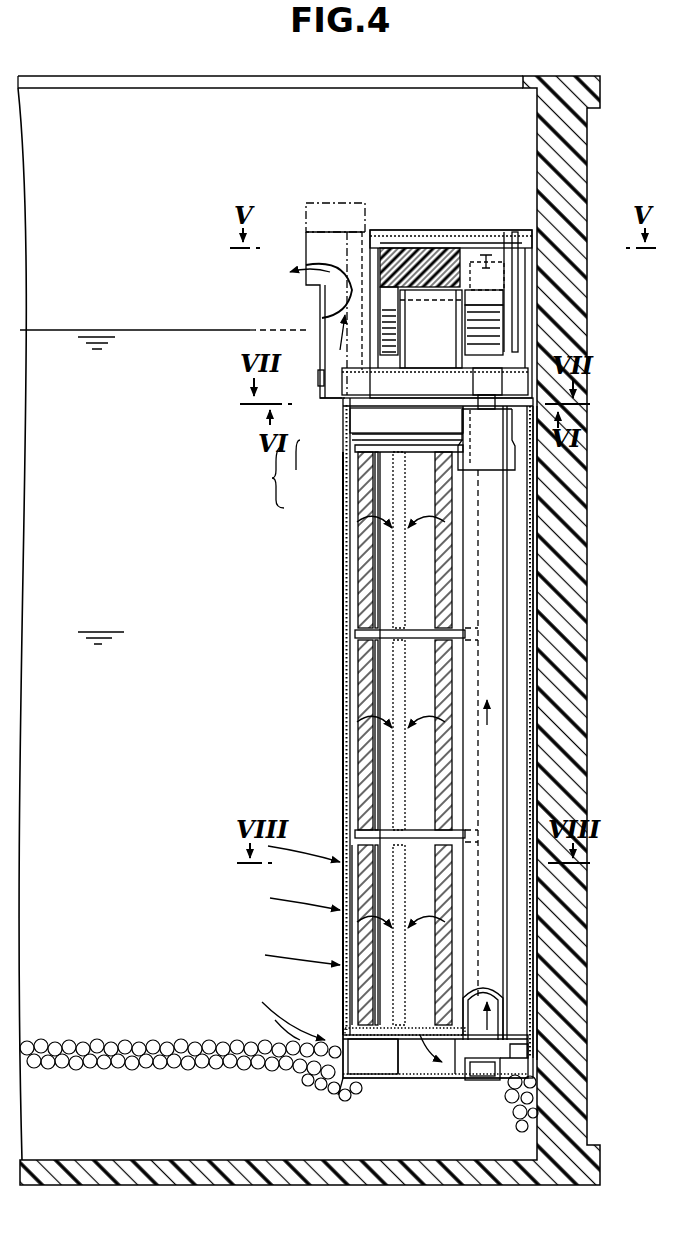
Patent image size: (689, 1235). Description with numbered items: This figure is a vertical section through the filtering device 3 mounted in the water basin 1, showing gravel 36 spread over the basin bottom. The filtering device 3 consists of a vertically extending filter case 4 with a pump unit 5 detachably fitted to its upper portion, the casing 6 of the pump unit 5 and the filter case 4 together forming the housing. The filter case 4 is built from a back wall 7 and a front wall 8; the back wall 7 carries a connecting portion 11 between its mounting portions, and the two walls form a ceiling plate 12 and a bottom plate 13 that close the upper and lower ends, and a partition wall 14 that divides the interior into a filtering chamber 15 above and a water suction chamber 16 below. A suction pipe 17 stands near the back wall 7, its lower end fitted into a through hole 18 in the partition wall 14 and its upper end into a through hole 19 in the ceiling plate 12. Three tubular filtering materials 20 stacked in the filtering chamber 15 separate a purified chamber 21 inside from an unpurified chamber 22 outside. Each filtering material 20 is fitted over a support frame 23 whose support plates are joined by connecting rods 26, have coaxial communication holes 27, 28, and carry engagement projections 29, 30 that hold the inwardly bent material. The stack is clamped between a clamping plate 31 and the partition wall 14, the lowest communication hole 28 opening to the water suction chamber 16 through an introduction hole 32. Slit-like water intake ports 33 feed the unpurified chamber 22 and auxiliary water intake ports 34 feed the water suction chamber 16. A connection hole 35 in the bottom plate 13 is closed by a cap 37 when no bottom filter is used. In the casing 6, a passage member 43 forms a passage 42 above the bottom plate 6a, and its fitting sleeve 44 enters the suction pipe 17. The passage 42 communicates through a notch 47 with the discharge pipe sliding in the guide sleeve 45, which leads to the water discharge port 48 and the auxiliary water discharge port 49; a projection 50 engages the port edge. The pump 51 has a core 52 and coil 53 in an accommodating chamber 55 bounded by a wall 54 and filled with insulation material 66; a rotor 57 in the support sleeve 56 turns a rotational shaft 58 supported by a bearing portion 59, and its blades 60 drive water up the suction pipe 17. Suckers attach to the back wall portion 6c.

The water basin 1 is at (600, 632).
The filtering device 3 is at (271, 477).
The filter case 4 is at (340, 510).
The pump unit 5 is at (295, 453).
The casing 6 is at (486, 232).
The bottom plate of the casing 6a is at (458, 382).
The back wall portion of the casing 6c is at (520, 309).
The back wall 7 is at (536, 690).
The front wall 8 is at (345, 600).
The connecting portion 11 is at (536, 580).
The ceiling plate 12 is at (426, 408).
The bottom plate 13 is at (428, 1078).
The partition wall 14 is at (376, 1057).
The filtering chamber 15 is at (352, 735).
The water suction chamber 16 is at (432, 1066).
The suction pipe 17 is at (497, 730).
The through hole 18 is at (478, 1040).
The through hole 19 is at (525, 442).
The filtering material 20 is at (365, 552).
The purified chamber 21 is at (423, 604).
The unpurified chamber 22 is at (358, 636).
The support frame 23 is at (358, 890).
The connecting rod 26 is at (378, 858).
The communication hole 27 is at (415, 738).
The communication hole 28 is at (422, 1028).
The engagement projection 29 is at (445, 845).
The engagement projection 30 is at (466, 980).
The clamping plate 31 is at (352, 467).
The introduction hole 32 is at (398, 1078).
The water intake port 33 is at (340, 966).
The auxiliary water intake port 34 is at (340, 1088).
The connection hole 35 is at (488, 1082).
The gravel 36 is at (160, 1050).
The cap 37 is at (502, 1065).
The passage 42 is at (480, 386).
The passage member 43 is at (346, 424).
The fitting sleeve 44 is at (485, 735).
The guide sleeve 45 is at (318, 305).
The notch 47 is at (343, 397).
The water discharge port 48 is at (312, 268).
The auxiliary water discharge port 49 is at (322, 350).
The projection 50 is at (320, 386).
The pump 51 is at (422, 272).
The core 52 is at (387, 268).
The coil 53 is at (456, 262).
The wall 54 is at (498, 268).
The accommodating chamber 55 is at (497, 262).
The support sleeve 56 is at (525, 288).
The rotor 57 is at (462, 336).
The rotational shaft 58 is at (505, 360).
The bearing portion 59 is at (480, 400).
The blade 60 is at (438, 352).
The insulation material 66 is at (411, 232).